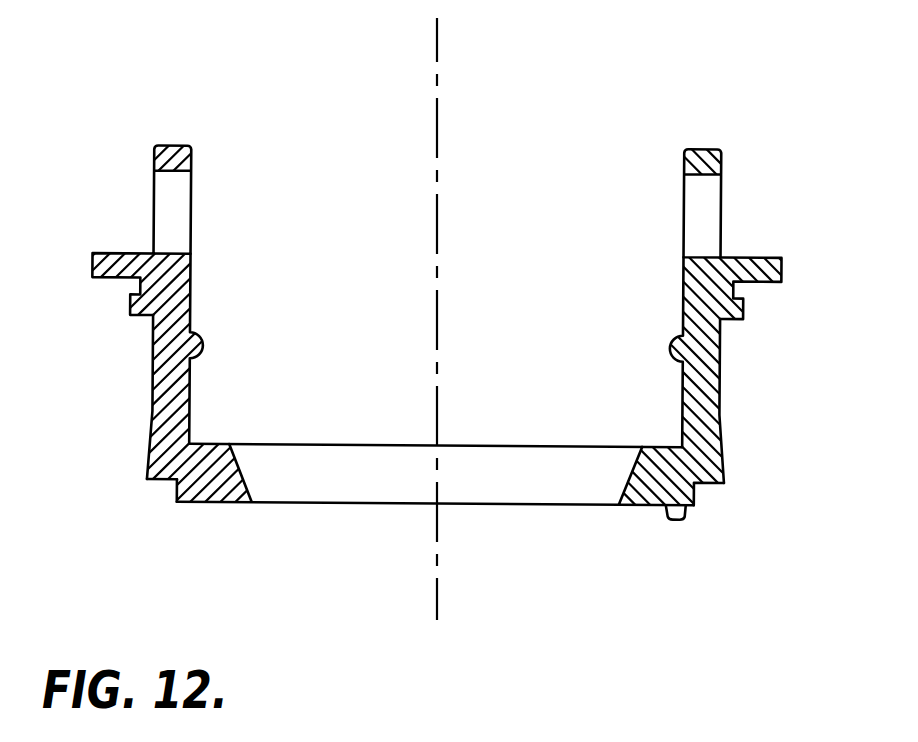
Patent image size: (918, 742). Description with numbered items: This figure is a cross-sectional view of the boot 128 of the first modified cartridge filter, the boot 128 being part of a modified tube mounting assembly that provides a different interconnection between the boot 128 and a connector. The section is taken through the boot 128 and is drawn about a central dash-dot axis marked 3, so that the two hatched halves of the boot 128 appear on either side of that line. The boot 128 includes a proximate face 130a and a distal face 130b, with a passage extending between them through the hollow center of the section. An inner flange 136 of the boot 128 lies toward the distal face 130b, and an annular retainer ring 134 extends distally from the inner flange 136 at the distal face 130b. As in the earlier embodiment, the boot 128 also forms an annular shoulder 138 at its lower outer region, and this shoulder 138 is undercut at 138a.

The boot 128 is at (745, 132).
The proximate face 130a is at (153, 255).
The distal face 130b is at (215, 503).
The annular retainer ring 134 is at (640, 505).
The inner flange 136 is at (665, 447).
The annular shoulder 138 is at (177, 503).
The undercut 138a is at (170, 483).
The section line 3 is at (437, 40).